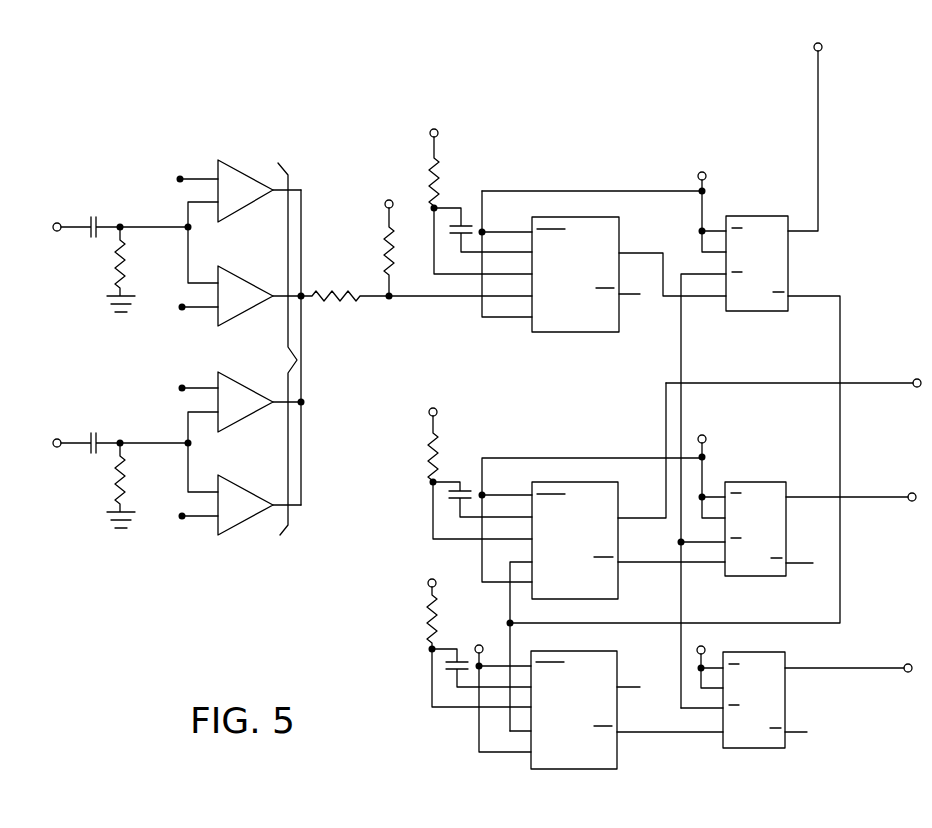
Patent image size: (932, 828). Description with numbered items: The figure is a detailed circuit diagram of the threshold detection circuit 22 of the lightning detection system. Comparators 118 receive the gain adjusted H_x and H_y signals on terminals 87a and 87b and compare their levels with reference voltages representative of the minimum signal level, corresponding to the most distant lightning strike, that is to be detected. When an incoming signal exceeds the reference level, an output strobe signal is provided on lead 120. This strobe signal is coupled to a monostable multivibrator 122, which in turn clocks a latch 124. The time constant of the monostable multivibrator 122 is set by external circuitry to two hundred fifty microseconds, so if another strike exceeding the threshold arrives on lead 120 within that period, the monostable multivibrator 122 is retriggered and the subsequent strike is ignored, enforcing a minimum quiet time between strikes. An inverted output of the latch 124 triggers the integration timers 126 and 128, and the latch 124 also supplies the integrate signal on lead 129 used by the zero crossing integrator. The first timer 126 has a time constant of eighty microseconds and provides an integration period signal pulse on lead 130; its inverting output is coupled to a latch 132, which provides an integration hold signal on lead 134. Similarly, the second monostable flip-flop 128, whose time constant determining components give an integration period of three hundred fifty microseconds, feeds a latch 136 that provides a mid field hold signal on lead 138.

The terminal 87a is at (71, 226).
The terminal 87b is at (71, 442).
The comparators 118 is at (297, 360).
The lead 120 is at (430, 297).
The threshold detection circuit 22 is at (490, 157).
The monostable multivibrator 122 is at (620, 230).
The latch 124 is at (788, 268).
The first timer 126 is at (618, 508).
The second monostable flip-flop 128 is at (617, 676).
The lead 129 is at (822, 51).
The lead 130 is at (893, 386).
The latch 132 is at (760, 578).
The lead 134 is at (897, 482).
The latch 136 is at (785, 707).
The lead 138 is at (898, 656).